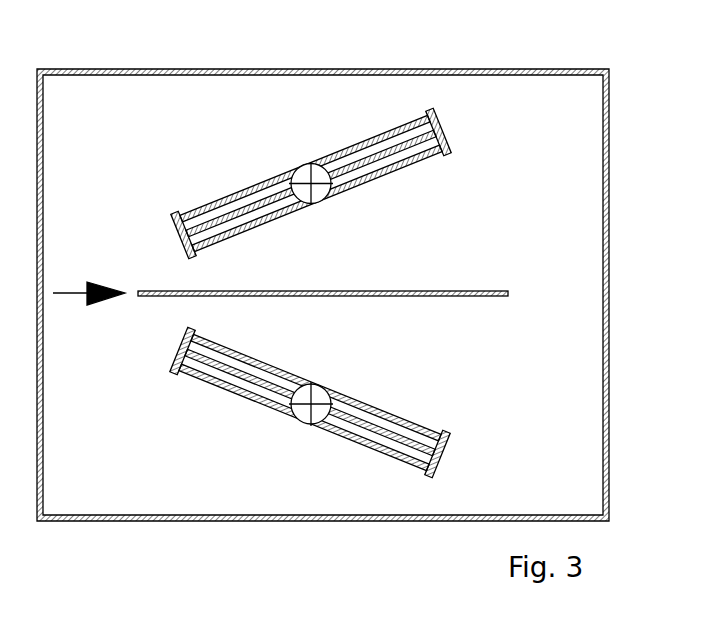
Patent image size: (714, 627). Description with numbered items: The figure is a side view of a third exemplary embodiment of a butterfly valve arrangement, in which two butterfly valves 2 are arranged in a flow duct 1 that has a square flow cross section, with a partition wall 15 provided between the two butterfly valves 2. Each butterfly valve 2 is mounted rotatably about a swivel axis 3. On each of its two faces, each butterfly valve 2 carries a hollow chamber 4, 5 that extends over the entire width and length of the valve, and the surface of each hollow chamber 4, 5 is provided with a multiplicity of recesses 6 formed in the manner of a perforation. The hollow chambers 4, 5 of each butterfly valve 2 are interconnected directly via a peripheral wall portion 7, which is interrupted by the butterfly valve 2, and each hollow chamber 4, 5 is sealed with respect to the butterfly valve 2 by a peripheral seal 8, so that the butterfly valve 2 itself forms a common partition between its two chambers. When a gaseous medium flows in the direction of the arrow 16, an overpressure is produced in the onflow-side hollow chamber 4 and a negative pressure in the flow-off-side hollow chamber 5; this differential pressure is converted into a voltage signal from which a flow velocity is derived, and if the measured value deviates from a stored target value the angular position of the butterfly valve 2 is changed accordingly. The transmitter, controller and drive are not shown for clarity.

The flow duct 1 is at (568, 69).
The butterfly valve 2 is at (332, 141).
The swivel axis 3 is at (318, 204).
The hollow chamber 4 is at (317, 198).
The hollow chamber 5 is at (305, 168).
The recesses 6 is at (311, 183).
The peripheral wall portion 7 is at (438, 132).
The peripheral seal 8 is at (183, 235).
The partition wall 15 is at (470, 293).
The arrow 16 is at (62, 293).